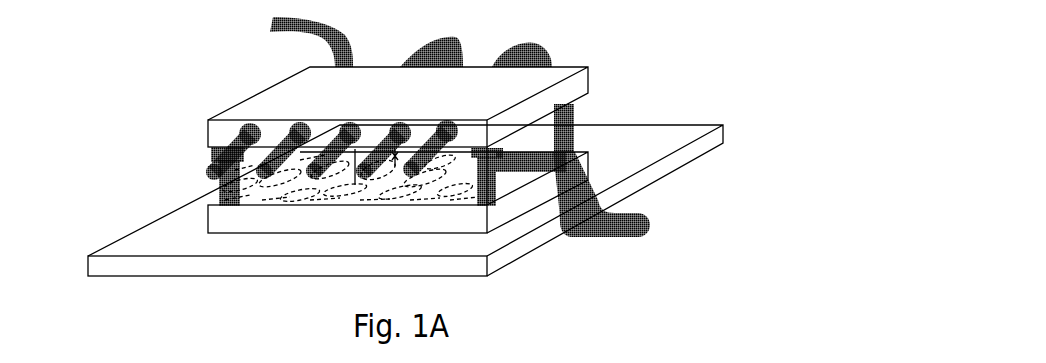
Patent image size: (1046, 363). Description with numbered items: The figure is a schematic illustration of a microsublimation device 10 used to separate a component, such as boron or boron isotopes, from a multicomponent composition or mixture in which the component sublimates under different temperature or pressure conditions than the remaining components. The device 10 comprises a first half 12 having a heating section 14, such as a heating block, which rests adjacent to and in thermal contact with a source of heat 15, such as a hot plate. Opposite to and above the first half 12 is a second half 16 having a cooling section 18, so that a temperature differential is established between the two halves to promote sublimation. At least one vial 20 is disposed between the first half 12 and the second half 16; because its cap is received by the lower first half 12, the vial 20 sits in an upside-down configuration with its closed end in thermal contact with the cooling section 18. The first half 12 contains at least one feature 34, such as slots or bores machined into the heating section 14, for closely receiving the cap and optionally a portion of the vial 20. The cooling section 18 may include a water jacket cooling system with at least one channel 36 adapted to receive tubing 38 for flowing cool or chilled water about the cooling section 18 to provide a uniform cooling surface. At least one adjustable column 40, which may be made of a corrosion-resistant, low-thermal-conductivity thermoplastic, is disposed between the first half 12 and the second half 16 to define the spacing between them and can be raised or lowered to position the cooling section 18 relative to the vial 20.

The device 10 is at (379, 157).
The first half 12 is at (311, 229).
The heating section 14 is at (231, 226).
The source of heat 15 is at (637, 172).
The second half 16 is at (343, 161).
The cooling section 18 is at (277, 100).
The vial 20 is at (367, 165).
The feature 34 is at (264, 207).
The channel 36 is at (450, 126).
The tubing 38 is at (343, 54).
The adjustable column 40 is at (490, 160).